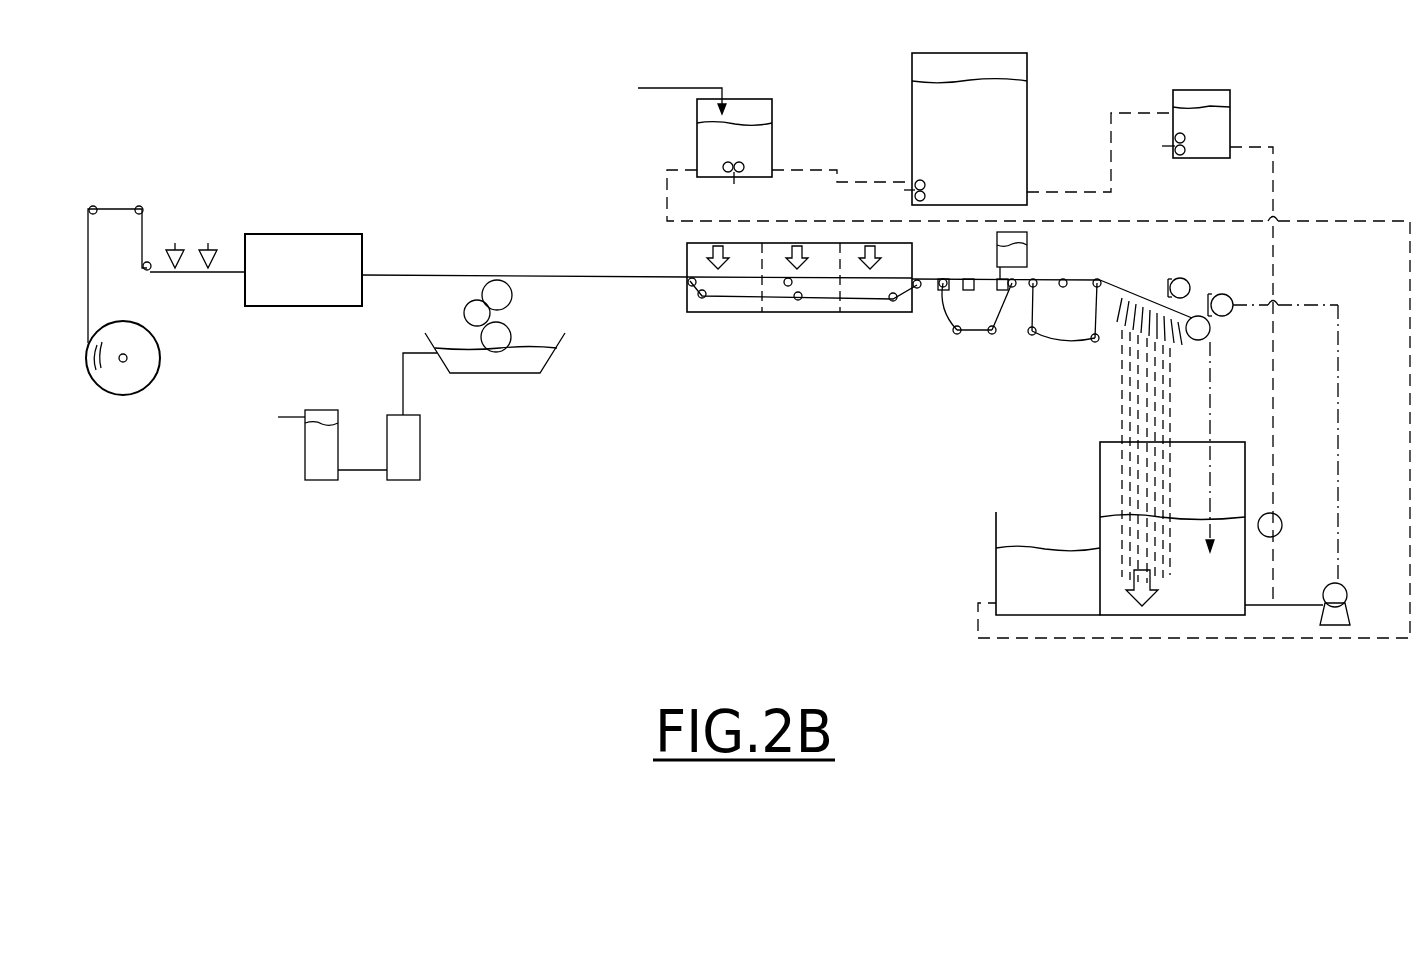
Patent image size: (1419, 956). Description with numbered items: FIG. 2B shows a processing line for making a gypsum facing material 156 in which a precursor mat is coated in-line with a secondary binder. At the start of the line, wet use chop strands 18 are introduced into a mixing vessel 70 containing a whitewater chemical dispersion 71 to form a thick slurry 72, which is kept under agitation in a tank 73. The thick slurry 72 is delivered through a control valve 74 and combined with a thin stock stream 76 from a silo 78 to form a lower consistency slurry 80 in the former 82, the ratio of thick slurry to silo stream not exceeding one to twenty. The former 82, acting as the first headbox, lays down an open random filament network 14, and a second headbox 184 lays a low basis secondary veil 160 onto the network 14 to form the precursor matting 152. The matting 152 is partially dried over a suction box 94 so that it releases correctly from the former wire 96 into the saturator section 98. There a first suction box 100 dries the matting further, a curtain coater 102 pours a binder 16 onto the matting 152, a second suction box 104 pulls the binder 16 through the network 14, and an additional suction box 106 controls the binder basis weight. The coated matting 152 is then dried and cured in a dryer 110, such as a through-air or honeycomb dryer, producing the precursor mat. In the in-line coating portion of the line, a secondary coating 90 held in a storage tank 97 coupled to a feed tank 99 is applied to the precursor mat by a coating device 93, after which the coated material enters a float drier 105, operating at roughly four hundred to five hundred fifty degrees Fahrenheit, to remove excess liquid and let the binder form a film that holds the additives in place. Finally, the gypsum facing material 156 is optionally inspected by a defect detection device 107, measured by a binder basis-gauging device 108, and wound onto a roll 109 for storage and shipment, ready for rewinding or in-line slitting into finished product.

The random filament network 14 is at (1198, 300).
The binder 16 is at (1022, 258).
The wet use chop strands 18 is at (661, 95).
The mixing tank 70 is at (775, 111).
The whitewater chemical dispersion 71 is at (700, 138).
The thick slurry 72 is at (1022, 112).
The tank 73 is at (1017, 62).
The control valve 74 is at (1280, 514).
The thin stock stream 76 is at (1260, 610).
The silo 78 is at (1195, 608).
The lower consistency slurry 80 is at (1338, 385).
The former 82 is at (1229, 295).
The secondary coating 90 is at (315, 462).
The coating device 93 is at (562, 371).
The suction box 94 is at (1063, 298).
The former wire 96 is at (1063, 342).
The storage tank 97 is at (320, 408).
The saturator section 98 is at (978, 313).
The feed tank 99 is at (422, 458).
The first suction box 100 is at (968, 335).
The curtain coater 102 is at (986, 272).
The second suction box 104 is at (940, 320).
The float drier 105 is at (352, 232).
The additional suction box 106 is at (933, 308).
The defect detection device 107 is at (177, 243).
The binder basis-gauging device 108 is at (210, 243).
The roll 109 is at (140, 390).
The dryer 110 is at (796, 313).
The precursor matting 152 is at (615, 276).
The gypsum facing material 156 is at (232, 270).
The low basis secondary veil 160 is at (1148, 292).
The second headbox 184 is at (1182, 278).